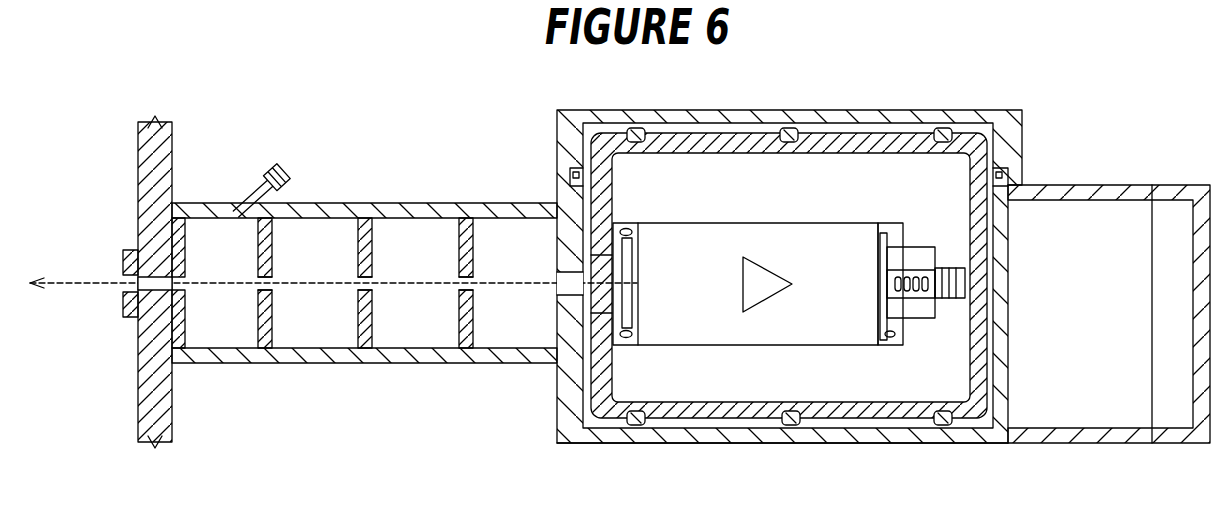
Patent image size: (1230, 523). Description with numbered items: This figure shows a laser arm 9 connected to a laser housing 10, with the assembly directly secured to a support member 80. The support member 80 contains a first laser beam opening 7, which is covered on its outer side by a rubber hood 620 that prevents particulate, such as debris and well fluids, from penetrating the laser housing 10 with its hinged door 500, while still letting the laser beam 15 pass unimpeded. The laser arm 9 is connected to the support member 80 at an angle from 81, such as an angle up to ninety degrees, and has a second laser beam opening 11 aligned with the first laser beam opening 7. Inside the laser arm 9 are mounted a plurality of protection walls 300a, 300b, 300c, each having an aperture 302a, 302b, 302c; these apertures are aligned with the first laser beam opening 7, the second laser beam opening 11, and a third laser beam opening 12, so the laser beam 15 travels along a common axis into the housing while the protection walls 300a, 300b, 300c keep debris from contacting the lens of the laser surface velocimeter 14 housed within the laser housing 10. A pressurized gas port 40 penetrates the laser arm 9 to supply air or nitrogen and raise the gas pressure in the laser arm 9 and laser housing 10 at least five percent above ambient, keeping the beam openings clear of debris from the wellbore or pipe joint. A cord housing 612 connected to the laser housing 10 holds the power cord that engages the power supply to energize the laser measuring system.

The first laser beam opening 7 is at (136, 282).
The laser arm 9 is at (368, 203).
The laser housing 10 is at (746, 443).
The second laser beam opening 11 is at (188, 282).
The third laser beam opening 12 is at (556, 283).
The laser surface velocimeter 14 is at (836, 223).
The laser beam 15 is at (58, 290).
The pressurized gas port 40 is at (250, 200).
The support member 80 is at (138, 174).
The angle 81 is at (232, 367).
The protection wall 300a is at (258, 326).
The protection wall 300b is at (358, 254).
The protection wall 300c is at (459, 254).
The aperture 302a is at (275, 287).
The aperture 302b is at (375, 287).
The aperture 302c is at (476, 287).
The hinged door 500 is at (840, 110).
The cord housing 612 is at (1112, 185).
The rubber hood 620 is at (123, 306).